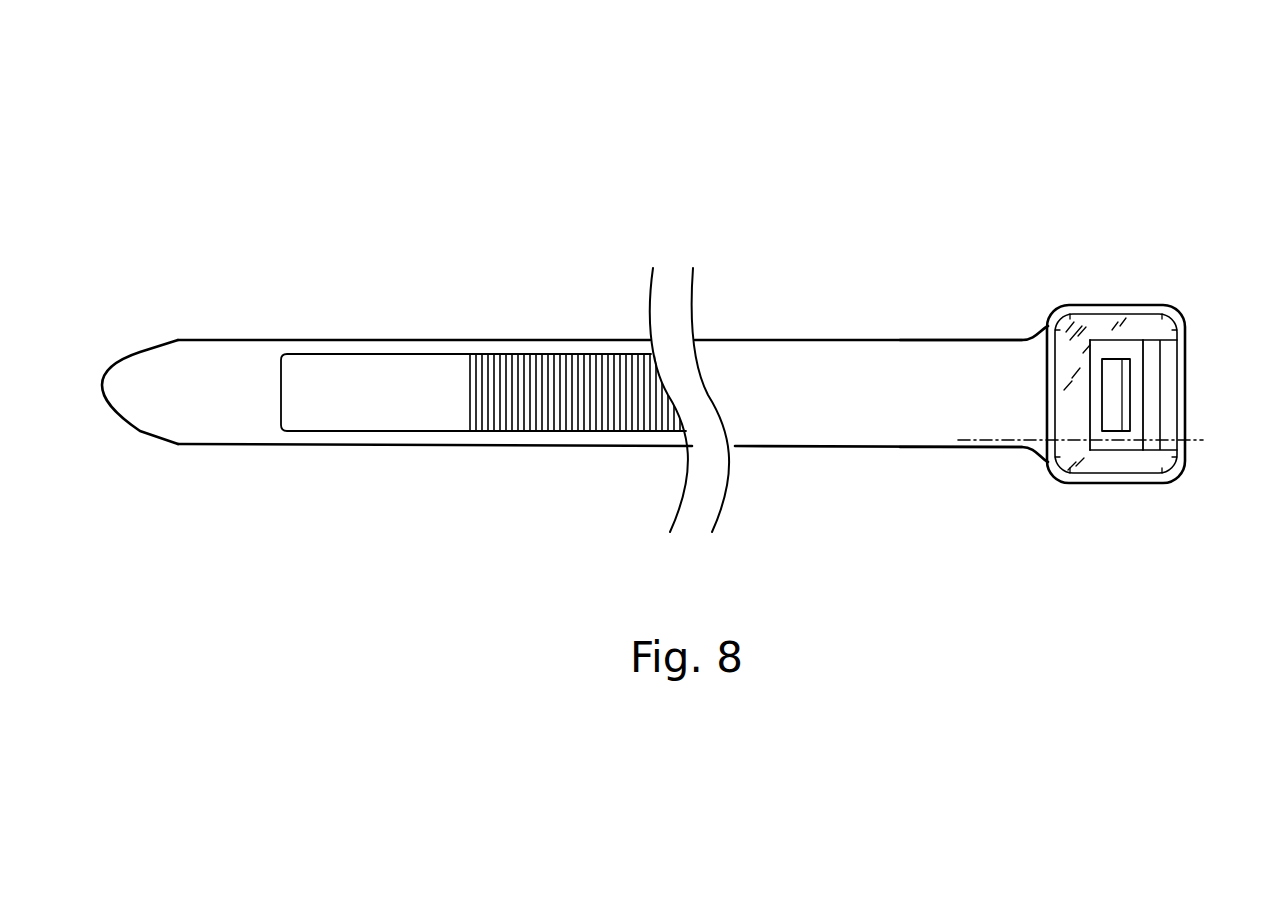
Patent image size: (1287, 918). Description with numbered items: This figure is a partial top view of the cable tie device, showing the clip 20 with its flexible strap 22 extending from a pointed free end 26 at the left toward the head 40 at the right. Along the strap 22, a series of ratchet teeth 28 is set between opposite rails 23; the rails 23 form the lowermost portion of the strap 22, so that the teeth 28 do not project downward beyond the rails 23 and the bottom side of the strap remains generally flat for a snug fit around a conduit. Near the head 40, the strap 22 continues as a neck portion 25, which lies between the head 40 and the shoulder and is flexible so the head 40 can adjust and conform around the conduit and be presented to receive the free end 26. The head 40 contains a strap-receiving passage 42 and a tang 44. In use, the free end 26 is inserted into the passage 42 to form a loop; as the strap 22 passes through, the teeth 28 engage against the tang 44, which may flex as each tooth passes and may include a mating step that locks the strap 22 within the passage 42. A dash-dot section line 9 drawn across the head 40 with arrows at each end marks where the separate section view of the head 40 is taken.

The clip 20 is at (961, 106).
The flexible strap 22 is at (328, 338).
The rails 23 is at (391, 347).
The neck portion 25 is at (1019, 338).
The free end 26 is at (143, 341).
The teeth 28 is at (536, 360).
The head 40 is at (1232, 325).
The strap-receiving passage 42 is at (1130, 350).
The tang 44 is at (1112, 398).
The line 9- 9 is at (1193, 450).